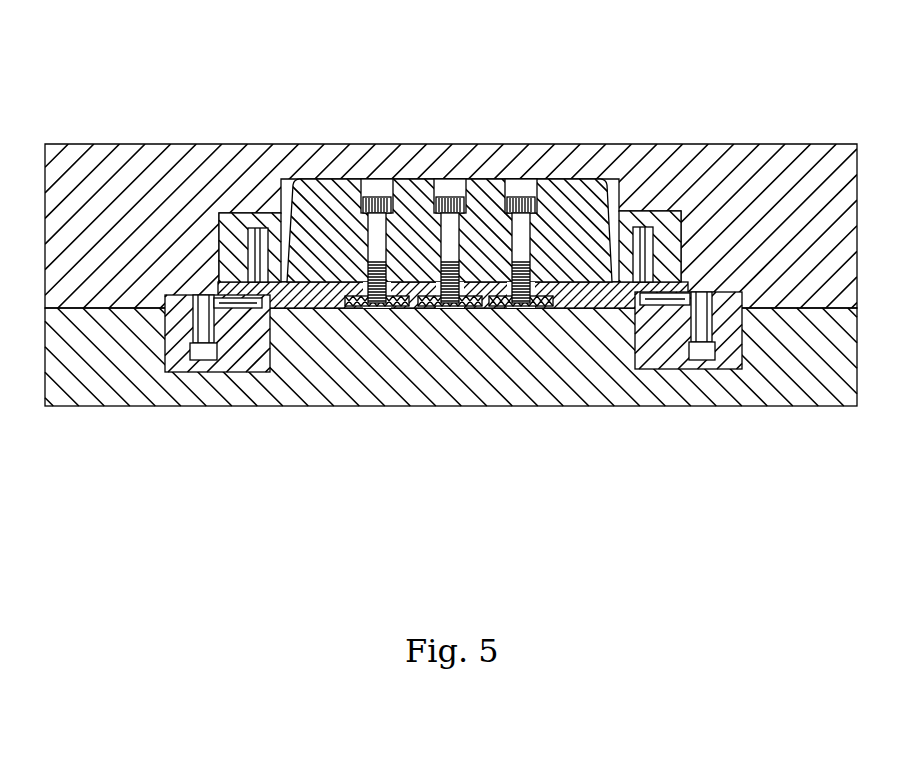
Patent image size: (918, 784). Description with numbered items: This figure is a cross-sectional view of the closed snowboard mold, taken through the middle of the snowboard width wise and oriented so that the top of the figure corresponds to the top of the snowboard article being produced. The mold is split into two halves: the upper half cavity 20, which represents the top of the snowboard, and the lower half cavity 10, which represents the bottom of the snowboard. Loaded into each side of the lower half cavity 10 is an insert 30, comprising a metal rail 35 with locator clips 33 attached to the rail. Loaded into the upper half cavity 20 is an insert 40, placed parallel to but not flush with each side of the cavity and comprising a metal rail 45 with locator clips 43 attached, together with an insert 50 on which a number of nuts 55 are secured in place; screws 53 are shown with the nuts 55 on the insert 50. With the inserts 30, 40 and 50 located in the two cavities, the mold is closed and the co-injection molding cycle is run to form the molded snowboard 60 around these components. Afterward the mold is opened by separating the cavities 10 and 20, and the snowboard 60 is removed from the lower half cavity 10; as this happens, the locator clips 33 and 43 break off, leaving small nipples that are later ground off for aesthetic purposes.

The lower half cavity 10 is at (575, 407).
The upper half cavity 20 is at (45, 146).
The insert 30 is at (185, 372).
The locator clips 33 is at (168, 295).
The metal rail 35 is at (668, 282).
The insert 40 is at (662, 300).
The locator clips 43 is at (229, 213).
The metal rail 45 is at (687, 245).
The insert 50 is at (302, 179).
The screws 53 is at (437, 180).
The nuts 55 is at (480, 306).
The snowboard article 60 is at (325, 308).